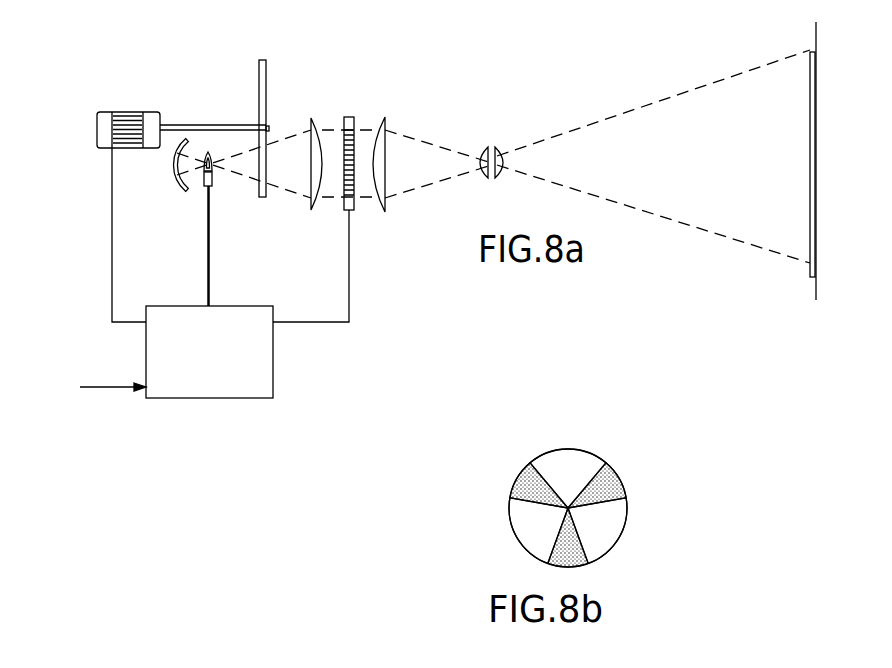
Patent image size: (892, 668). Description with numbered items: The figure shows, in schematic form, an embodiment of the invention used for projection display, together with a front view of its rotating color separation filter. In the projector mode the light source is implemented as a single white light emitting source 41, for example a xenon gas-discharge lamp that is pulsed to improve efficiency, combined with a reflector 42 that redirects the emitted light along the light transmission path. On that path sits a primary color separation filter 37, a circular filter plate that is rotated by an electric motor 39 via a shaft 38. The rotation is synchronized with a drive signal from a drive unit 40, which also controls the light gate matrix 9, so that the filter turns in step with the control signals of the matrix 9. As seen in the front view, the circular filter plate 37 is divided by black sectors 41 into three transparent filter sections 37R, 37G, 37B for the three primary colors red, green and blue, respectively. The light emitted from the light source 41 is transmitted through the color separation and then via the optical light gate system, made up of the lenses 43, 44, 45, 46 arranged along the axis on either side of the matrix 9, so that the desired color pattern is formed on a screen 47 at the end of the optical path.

In FIG. 8A, the light gate matrix 9 is at (349, 117).
In FIG. 8A, the primary color separation filter 37 is at (264, 70).
In FIG. 8B, the primary color separation filter 37 is at (582, 488).
In FIG. 8B, the red filter section 37R is at (556, 456).
In FIG. 8B, the green filter section 37G is at (622, 526).
In FIG. 8B, the blue filter section 37B is at (513, 515).
In FIG. 8A, the shaft 38 is at (172, 125).
In FIG. 8A, the electric motor 39 is at (100, 112).
In FIG. 8A, the drive unit 40 is at (197, 400).
In FIG. 8A, the white light emitting source 41 is at (204, 184).
In FIG. 8B, the white light emitting source 41 is at (620, 478).
In FIG. 8A, the reflector 42 is at (176, 172).
In FIG. 8A, the optical light gate system lens 43 is at (316, 186).
In FIG. 8A, the optical light gate system lens 44 is at (388, 178).
In FIG. 8A, the optical light gate system lens 45 is at (484, 147).
In FIG. 8A, the optical light gate system lens 46 is at (500, 147).
In FIG. 8A, the screen 47 is at (852, 144).